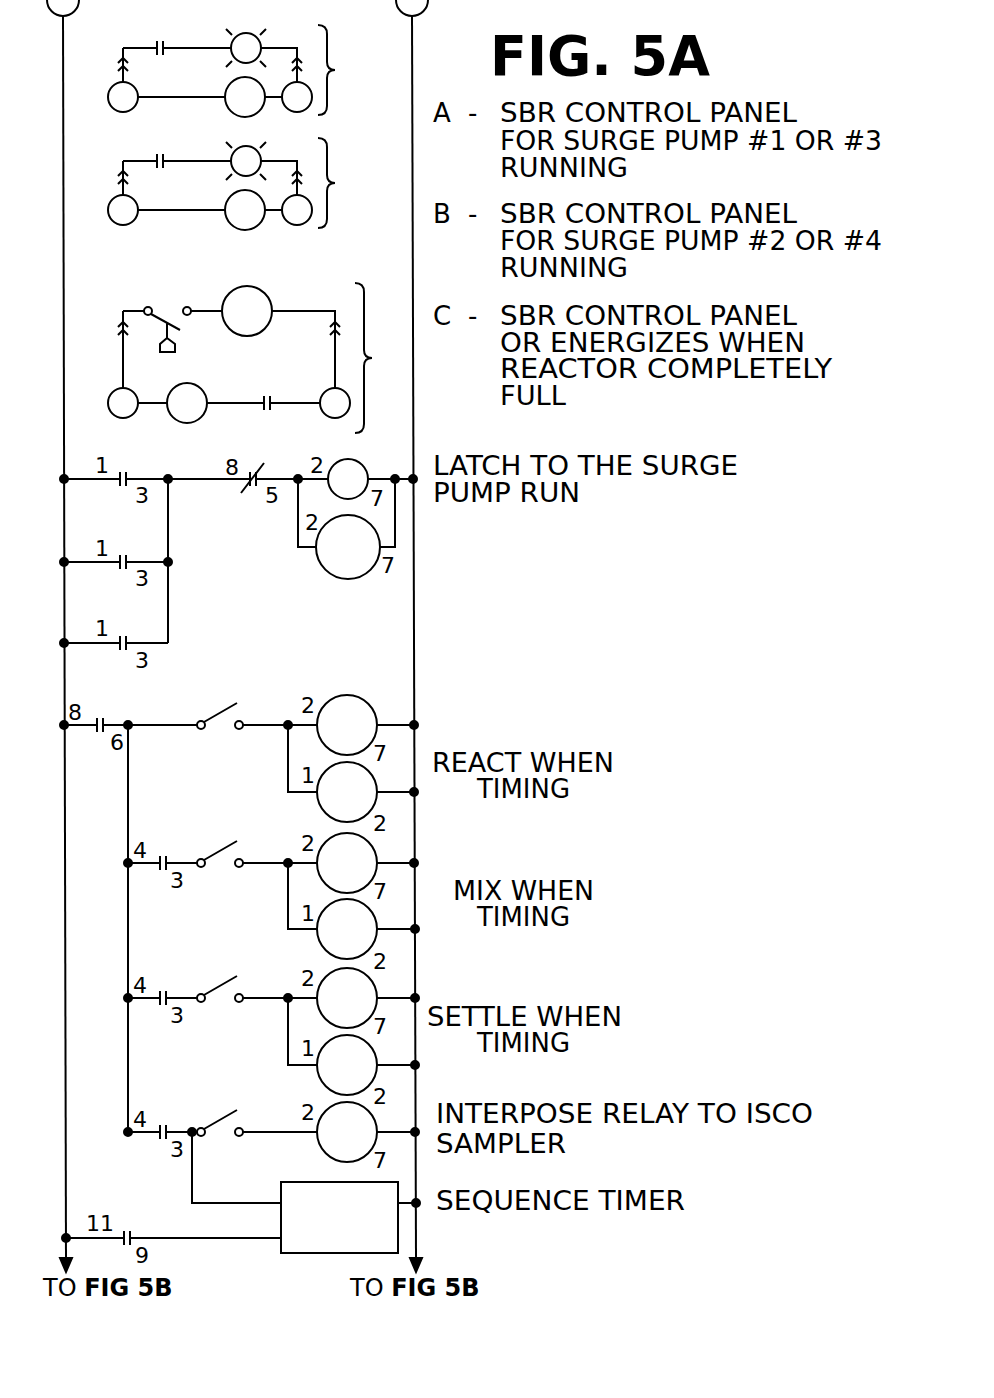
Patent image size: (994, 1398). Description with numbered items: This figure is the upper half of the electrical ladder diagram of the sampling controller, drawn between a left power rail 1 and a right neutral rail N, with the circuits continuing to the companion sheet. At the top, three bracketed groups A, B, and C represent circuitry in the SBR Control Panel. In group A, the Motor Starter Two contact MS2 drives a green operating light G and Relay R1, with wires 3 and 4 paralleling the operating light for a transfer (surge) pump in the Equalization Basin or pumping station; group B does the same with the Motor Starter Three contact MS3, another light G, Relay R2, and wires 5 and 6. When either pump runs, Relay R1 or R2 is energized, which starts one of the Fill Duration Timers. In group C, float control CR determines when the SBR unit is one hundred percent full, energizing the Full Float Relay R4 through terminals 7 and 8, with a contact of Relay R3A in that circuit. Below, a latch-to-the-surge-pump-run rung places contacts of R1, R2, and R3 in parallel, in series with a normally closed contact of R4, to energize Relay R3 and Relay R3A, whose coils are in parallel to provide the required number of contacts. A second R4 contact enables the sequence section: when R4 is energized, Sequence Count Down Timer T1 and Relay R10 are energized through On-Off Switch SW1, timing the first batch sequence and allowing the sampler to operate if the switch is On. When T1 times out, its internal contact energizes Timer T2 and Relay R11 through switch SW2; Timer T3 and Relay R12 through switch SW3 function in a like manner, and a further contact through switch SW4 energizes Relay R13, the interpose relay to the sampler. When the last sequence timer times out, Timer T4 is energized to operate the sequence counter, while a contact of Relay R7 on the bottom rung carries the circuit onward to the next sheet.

The line 1 power rail 1 is at (63, 636).
The neutral power rail N is at (412, 636).
The SBR control panel circuit for surge pump #1 or #3 running A is at (206, 250).
The SBR control panel for surge pump #2 or #4 running B is at (206, 348).
The SBR control panel energized when reactor completely full C is at (227, 491).
The Motor Starter 2 MS2 is at (177, 35).
The Motor Starter 3 MS3 is at (177, 148).
The green indicator lamp G is at (246, 104).
The wire 3 is at (123, 97).
The wire 4 is at (297, 97).
The wire 5 is at (123, 210).
The wire 6 is at (297, 210).
The terminal 7 is at (123, 403).
The terminal 8 is at (335, 403).
The Relay R1 is at (164, 281).
The Relay R2 is at (164, 379).
The Relay R3 is at (216, 554).
The Relay R3A is at (321, 468).
The 100% Full Float Relay R4 is at (181, 557).
The float control CR is at (247, 311).
The relay R7 contact R7 is at (173, 1221).
The Relay R10 is at (351, 725).
The Relay R11 is at (351, 863).
The Relay R12 is at (351, 998).
The relay R13 coil (interpose relay to ISCO sampler) R13 is at (366, 1132).
The Sequence Count Down Timer T1 is at (271, 797).
The Sequence Count Down Timer T2 is at (271, 934).
The Sequence Count Down Timer T3 is at (271, 1068).
The Timer T4 is at (304, 1192).
The On-Off Switch SW1 is at (208, 720).
The On-Off Switch SW2 is at (242, 858).
The On-Off Switch SW3 is at (242, 993).
The On-Off Switch SW4 is at (257, 1127).